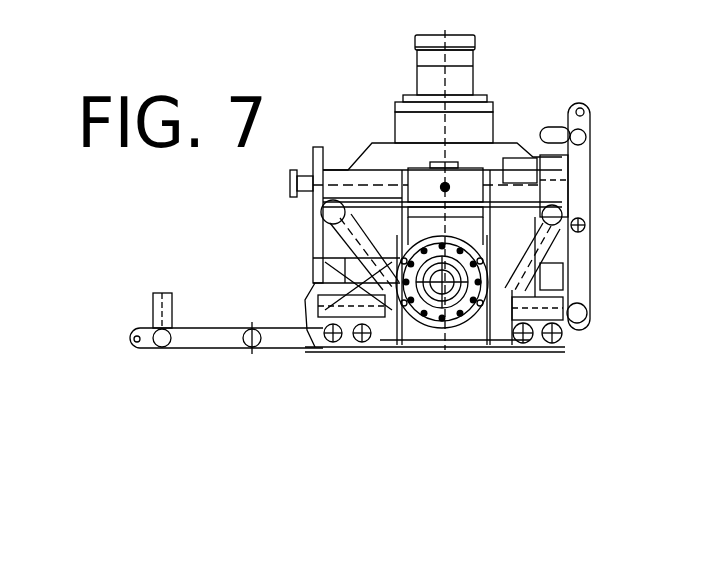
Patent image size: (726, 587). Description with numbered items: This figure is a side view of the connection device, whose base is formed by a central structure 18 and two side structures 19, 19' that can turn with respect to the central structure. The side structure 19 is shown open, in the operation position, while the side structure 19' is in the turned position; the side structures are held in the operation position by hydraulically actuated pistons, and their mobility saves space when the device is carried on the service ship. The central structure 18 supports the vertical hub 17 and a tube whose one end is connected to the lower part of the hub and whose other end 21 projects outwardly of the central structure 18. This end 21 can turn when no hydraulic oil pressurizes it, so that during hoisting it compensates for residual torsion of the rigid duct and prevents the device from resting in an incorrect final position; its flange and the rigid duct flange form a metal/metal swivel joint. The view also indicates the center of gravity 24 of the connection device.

The vertical hub 17 is at (516, 102).
The central structure 18 is at (333, 342).
The side structure 19 is at (226, 356).
The side structure 19' is at (612, 245).
The end of the tube 21 is at (408, 340).
The center of gravity 24 is at (472, 333).